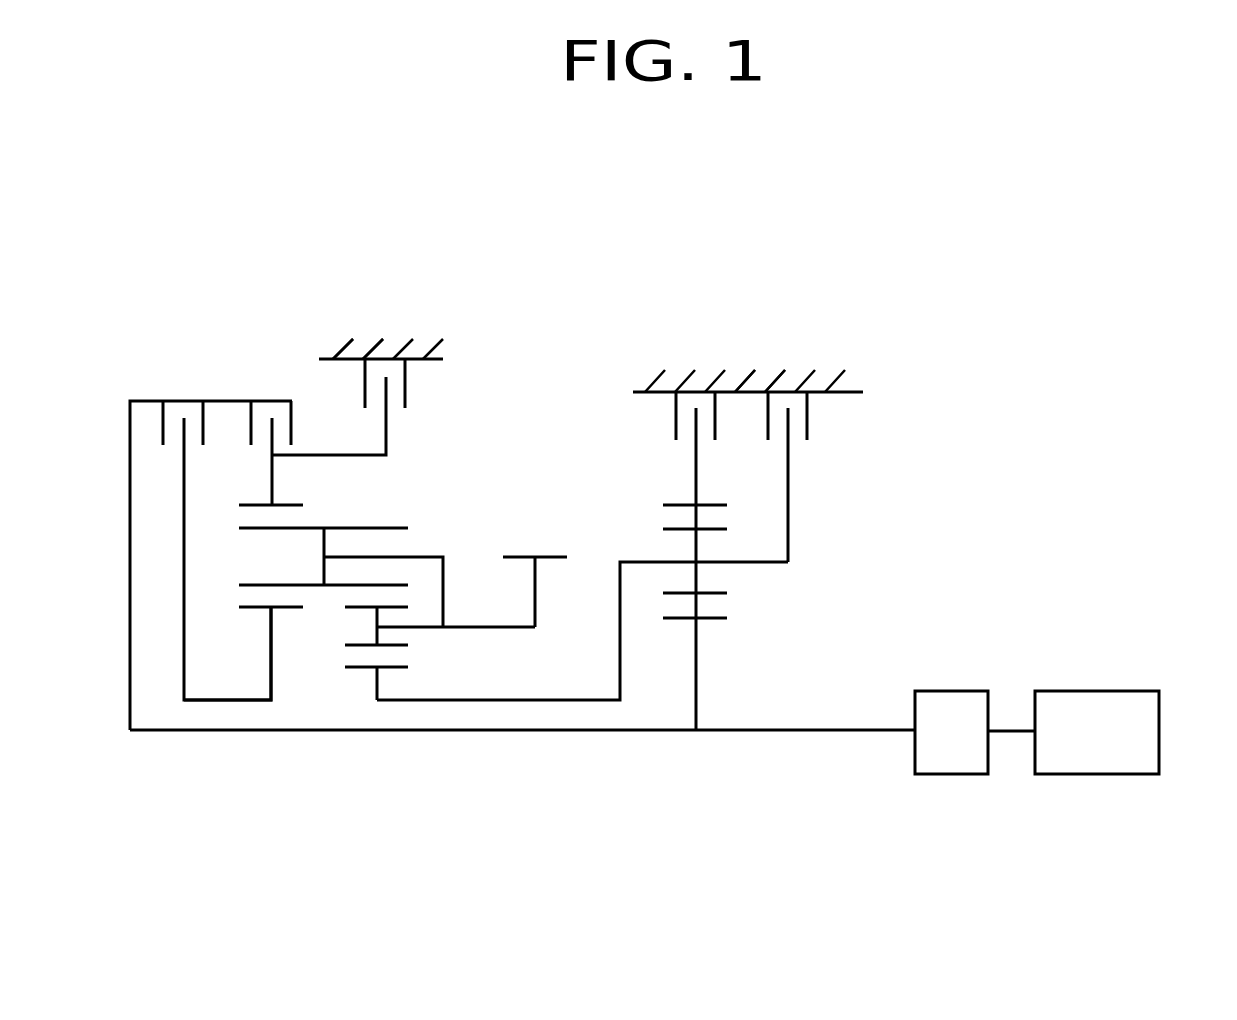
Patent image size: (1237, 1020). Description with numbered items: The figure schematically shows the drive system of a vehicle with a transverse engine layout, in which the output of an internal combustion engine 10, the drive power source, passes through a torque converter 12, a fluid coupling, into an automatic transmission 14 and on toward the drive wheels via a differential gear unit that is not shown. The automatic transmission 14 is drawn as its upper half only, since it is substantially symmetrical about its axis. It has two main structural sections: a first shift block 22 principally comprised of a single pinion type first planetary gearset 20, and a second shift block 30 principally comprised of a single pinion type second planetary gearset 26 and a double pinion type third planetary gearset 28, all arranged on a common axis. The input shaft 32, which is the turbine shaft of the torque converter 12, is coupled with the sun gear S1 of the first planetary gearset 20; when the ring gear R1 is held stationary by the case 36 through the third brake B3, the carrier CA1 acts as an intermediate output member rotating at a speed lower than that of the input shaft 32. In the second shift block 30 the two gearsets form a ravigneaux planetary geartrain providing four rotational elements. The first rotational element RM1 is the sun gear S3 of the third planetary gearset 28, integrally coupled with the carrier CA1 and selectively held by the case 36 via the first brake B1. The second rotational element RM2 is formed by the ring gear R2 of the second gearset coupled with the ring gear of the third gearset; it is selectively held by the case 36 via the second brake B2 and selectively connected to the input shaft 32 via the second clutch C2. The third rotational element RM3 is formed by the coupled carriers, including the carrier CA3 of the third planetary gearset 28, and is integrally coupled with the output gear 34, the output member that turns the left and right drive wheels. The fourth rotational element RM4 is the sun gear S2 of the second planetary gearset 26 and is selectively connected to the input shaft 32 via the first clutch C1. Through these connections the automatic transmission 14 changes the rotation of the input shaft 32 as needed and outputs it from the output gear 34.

The internal combustion engine 10 is at (1097, 691).
The torque converter 12 is at (943, 691).
The automatic transmission 14 is at (845, 290).
The first planetary gearset 20 is at (694, 740).
The first shift block 22 is at (612, 398).
The second planetary gearset 26 is at (275, 725).
The third planetary gearset 28 is at (372, 725).
The second shift block 30 is at (465, 352).
The input shaft 32 is at (832, 731).
The output gear 34 is at (548, 557).
The case 36 is at (378, 345).
The first clutch C1 is at (211, 551).
The second clutch C2 is at (271, 439).
The first brake B1 is at (803, 416).
The second brake B2 is at (381, 373).
The third brake B3 is at (676, 416).
The ring gear R1 is at (717, 503).
The ring gear R2 is at (283, 505).
The sun gear S1 is at (708, 620).
The sun gear S2 is at (280, 608).
The sun gear S3 is at (383, 667).
The carrier CA1 is at (788, 525).
The carrier CA3 is at (420, 557).
The first rotational element RM1 is at (470, 700).
The second rotational element RM2 is at (350, 455).
The third rotational element RM3 is at (490, 628).
The fourth rotational element RM4 is at (272, 658).